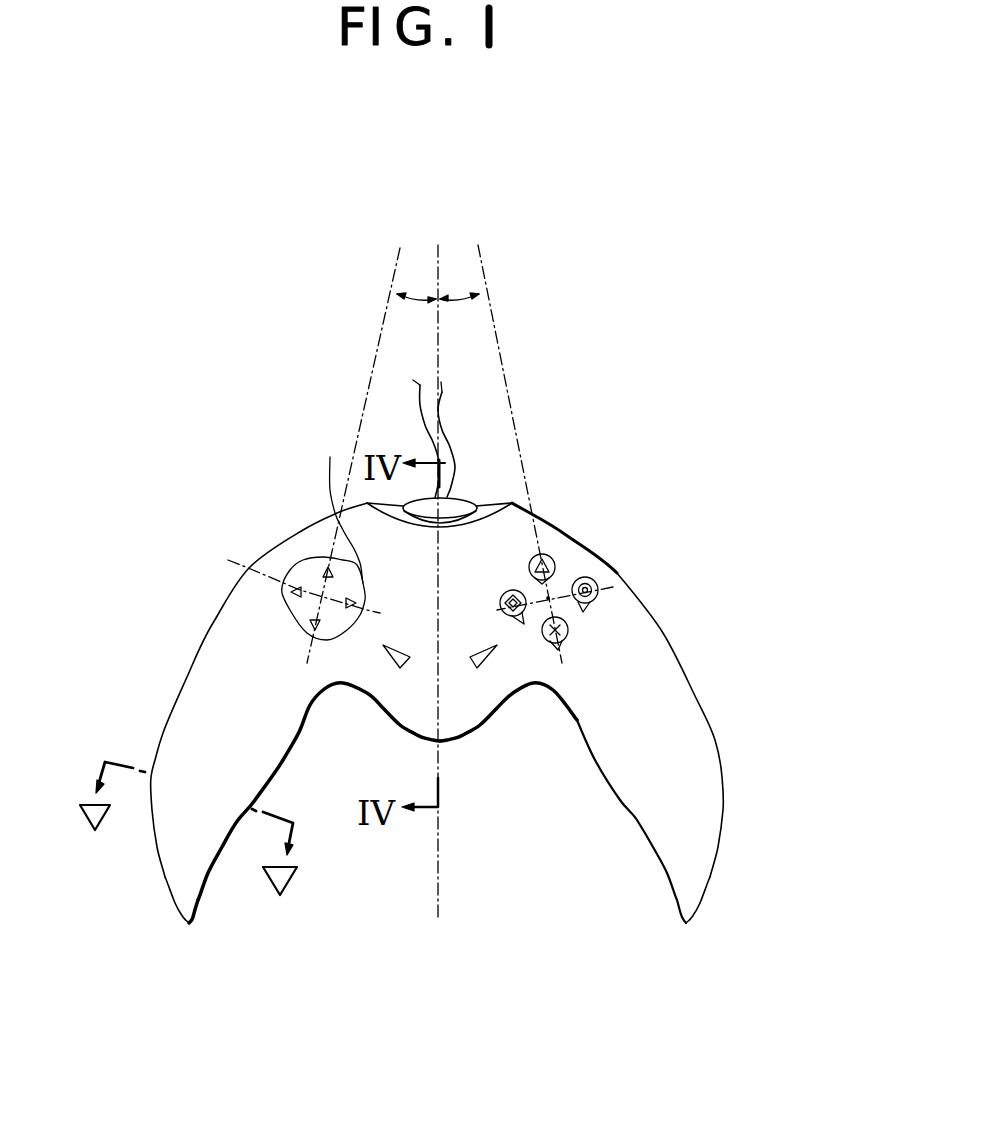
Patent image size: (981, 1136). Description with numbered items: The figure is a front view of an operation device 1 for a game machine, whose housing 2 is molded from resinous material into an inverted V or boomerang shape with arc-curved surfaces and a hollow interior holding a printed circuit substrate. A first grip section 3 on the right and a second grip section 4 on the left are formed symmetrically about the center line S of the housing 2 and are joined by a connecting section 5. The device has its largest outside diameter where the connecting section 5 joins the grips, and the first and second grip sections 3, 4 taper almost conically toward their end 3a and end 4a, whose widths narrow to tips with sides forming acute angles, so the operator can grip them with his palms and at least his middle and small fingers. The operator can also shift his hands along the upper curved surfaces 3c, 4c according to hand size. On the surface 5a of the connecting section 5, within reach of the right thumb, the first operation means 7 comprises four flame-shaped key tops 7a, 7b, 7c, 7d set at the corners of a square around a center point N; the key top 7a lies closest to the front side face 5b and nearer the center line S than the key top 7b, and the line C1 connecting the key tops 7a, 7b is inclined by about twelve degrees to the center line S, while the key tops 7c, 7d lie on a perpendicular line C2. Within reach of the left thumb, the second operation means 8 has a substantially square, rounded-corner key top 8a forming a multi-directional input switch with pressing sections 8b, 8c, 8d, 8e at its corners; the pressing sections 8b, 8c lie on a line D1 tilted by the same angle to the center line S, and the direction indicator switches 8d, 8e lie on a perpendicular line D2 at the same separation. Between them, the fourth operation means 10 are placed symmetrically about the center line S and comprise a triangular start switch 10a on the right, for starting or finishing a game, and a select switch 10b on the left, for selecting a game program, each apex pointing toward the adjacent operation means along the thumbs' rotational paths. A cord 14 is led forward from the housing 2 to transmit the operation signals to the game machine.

The operation device 1 is at (736, 534).
The housing 2 is at (178, 690).
The first grip section 3 is at (690, 785).
The end of first grip section 3a is at (690, 912).
The upper curved surface of first grip section 3c is at (527, 507).
The second grip section 4 is at (180, 745).
The end of second grip section 4a is at (185, 912).
The upper curved surface of second grip section 4c is at (415, 585).
The connecting section 5 is at (410, 623).
The surface of connecting section 5a is at (330, 502).
The front side face of connecting section 5b is at (493, 507).
The first operation means 7 is at (618, 600).
The key top 7a is at (553, 563).
The key top 7b is at (570, 638).
The key top 7c is at (600, 607).
The key top 7d is at (506, 590).
The second operation means 8 is at (288, 553).
The key top 8a is at (297, 603).
The pressing section 8b is at (323, 567).
The pressing section 8c is at (309, 624).
The pressing section 8d is at (292, 583).
The pressing section 8e is at (333, 557).
The fourth operation means 10 is at (409, 688).
The start switch 10a is at (483, 658).
The select switch 10b is at (395, 660).
The cord 14 is at (453, 450).
The line connecting key tops 7a and 7b C1 is at (497, 335).
The line through key tops 7c and 7d C2 is at (613, 587).
The line connecting pressing sections 8b and 8c D1 is at (383, 326).
The line through pressing sections 8d and 8e D2 is at (228, 560).
The center point N is at (572, 608).
The center line of housing S is at (438, 895).